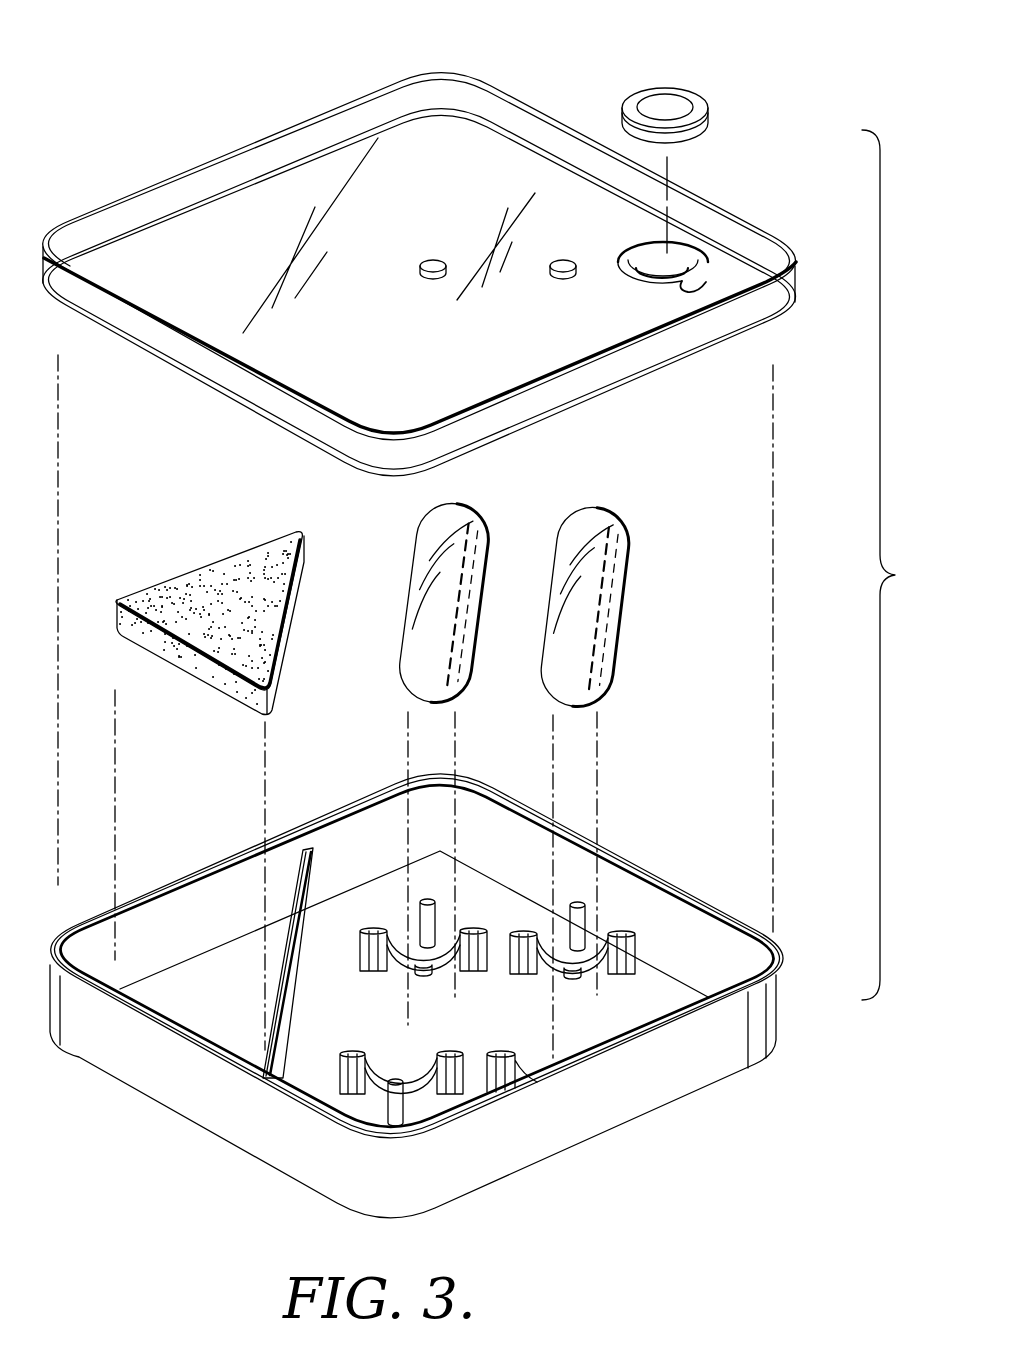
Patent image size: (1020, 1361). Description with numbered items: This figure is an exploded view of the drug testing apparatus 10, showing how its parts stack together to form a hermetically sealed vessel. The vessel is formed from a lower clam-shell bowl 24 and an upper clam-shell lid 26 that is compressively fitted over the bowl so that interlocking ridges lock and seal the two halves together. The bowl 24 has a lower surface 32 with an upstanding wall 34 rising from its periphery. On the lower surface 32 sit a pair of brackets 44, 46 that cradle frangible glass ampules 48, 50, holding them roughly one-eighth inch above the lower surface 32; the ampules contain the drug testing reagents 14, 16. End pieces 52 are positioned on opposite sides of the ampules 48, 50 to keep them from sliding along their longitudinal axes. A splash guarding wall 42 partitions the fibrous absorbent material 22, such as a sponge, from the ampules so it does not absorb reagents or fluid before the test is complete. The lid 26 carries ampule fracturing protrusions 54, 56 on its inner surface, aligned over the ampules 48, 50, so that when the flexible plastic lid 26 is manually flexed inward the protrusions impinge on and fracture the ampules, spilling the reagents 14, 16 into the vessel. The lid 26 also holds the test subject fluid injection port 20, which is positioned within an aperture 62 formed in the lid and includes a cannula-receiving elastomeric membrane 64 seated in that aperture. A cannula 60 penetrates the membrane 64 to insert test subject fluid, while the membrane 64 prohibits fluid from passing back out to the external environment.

The drug testing apparatus 10 is at (140, 95).
The reagent 14 is at (472, 513).
The reagent 16 is at (622, 539).
The injection port 20 is at (706, 104).
The absorbent material 22 is at (230, 555).
The bowl 24 is at (726, 1084).
The lid 26 is at (159, 183).
The lower surface 32 is at (658, 994).
The upstanding wall 34 is at (740, 957).
The splash guarding wall 42 is at (293, 998).
The bracket 44 is at (362, 945).
The bracket 46 is at (512, 955).
The frangible glass ampule 48 is at (414, 587).
The frangible glass ampule 50 is at (547, 642).
The end piece 52 is at (436, 924).
The ampule fracturing protrusion 54 is at (551, 283).
The ampule fracturing protrusion 56 is at (427, 279).
The cannula 60 is at (625, 263).
The aperture 62 is at (632, 94).
The elastomeric membrane 64 is at (693, 290).